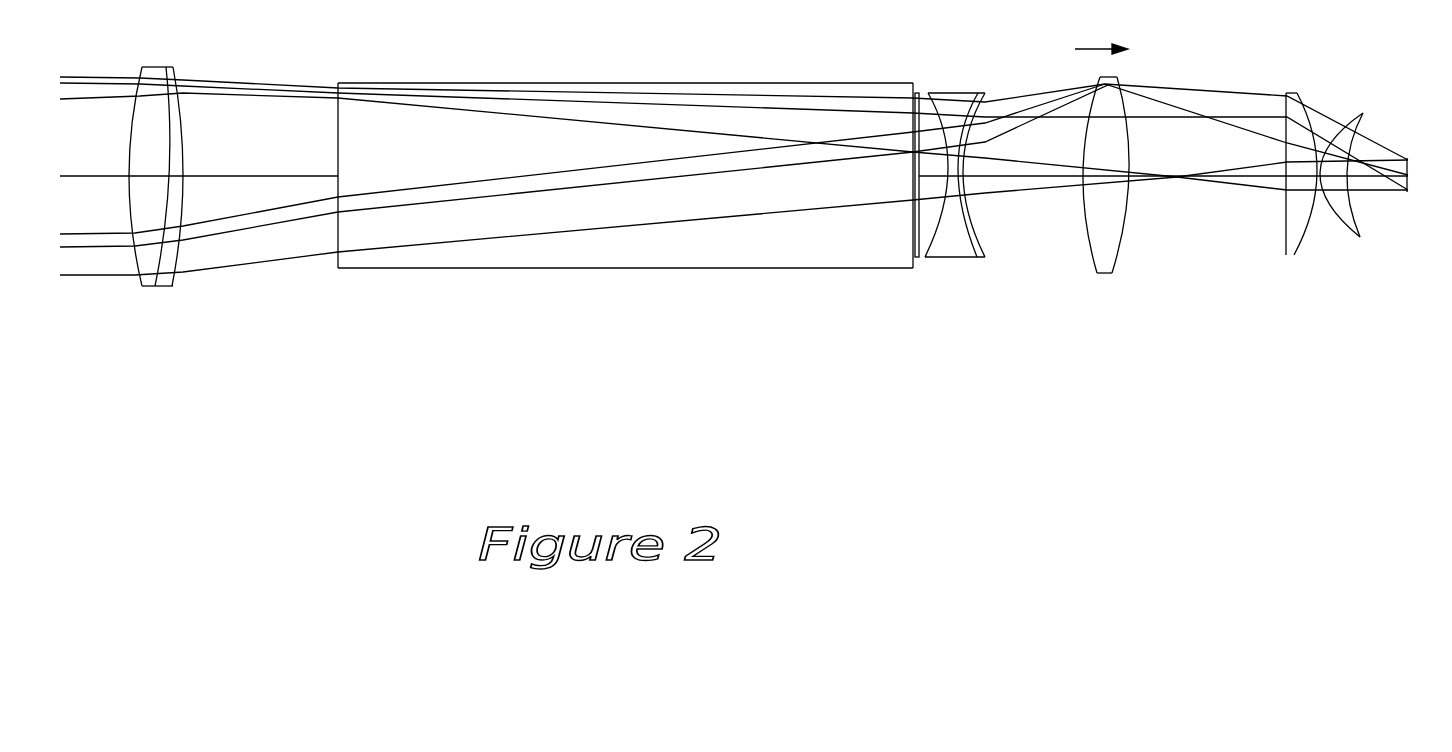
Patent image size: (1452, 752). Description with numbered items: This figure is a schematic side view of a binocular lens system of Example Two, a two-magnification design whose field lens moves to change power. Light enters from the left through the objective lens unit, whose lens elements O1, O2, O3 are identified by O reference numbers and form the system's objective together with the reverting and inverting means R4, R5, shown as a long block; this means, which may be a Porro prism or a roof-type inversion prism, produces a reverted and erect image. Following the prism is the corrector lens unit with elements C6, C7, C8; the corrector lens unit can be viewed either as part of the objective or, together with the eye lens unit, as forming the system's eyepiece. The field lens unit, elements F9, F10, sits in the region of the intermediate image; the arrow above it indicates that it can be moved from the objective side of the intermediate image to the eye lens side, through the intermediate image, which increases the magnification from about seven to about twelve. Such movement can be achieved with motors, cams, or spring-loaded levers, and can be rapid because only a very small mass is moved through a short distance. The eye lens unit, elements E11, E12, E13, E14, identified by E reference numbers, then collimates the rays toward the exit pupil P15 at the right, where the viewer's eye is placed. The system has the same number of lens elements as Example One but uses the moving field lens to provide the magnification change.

The objective lens element O1 is at (131, 249).
The objective lens element O2 is at (157, 258).
The objective lens element O3 is at (174, 265).
The reverting and inverting means R4 is at (338, 250).
The reverting and inverting means R5 is at (916, 260).
The corrector lens element C6 is at (924, 258).
The corrector lens element C7 is at (947, 258).
The corrector lens element C8 is at (986, 258).
The field lens element F9 is at (1087, 250).
The field lens element F10 is at (1121, 250).
The eye lens element E11 is at (1286, 238).
The eye lens element E12 is at (1300, 240).
The eye lens element E13 is at (1352, 236).
The eye lens element E14 is at (1356, 208).
The exit pupil P15 is at (1407, 157).